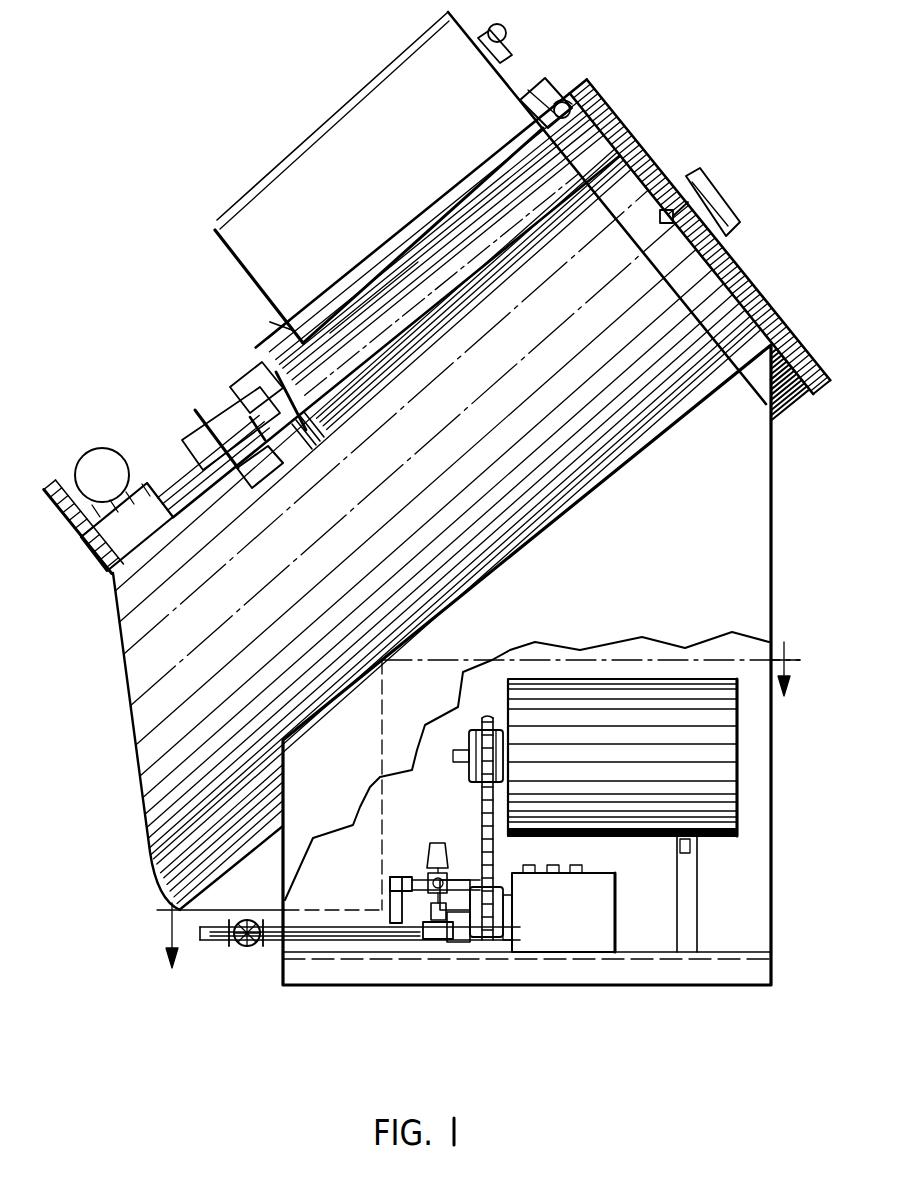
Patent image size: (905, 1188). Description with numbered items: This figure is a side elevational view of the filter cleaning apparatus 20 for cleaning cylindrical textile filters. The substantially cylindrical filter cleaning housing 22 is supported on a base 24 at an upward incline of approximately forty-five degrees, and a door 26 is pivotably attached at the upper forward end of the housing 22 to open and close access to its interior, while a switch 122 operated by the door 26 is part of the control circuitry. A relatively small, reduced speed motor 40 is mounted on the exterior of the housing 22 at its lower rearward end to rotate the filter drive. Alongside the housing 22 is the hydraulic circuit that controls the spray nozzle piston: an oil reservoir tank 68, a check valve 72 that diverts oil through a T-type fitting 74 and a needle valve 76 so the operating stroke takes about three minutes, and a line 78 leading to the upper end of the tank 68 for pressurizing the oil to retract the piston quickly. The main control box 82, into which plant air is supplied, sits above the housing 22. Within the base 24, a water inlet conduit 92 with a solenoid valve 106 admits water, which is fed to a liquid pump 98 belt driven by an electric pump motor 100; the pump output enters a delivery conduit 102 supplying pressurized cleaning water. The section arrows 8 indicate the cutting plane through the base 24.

The filter cleaning apparatus 20 is at (134, 333).
The filter cleaning housing 22 is at (528, 463).
The base 24 is at (757, 568).
The door 26 is at (650, 167).
The motor 40 is at (95, 461).
The oil reservoir tank 68 is at (418, 255).
The check valve 72 is at (215, 412).
The T-type fitting 74 is at (212, 440).
The needle valve 76 is at (243, 398).
The line 78 is at (570, 93).
The main control box 82 is at (330, 150).
The water inlet conduit 92 is at (268, 944).
The liquid pump 98 is at (570, 935).
The electric pump motor 100 is at (695, 787).
The delivery conduit 102 is at (385, 910).
The solenoid valve 106 is at (437, 923).
The switch 122 is at (553, 107).
The section line 8- 8 is at (478, 820).